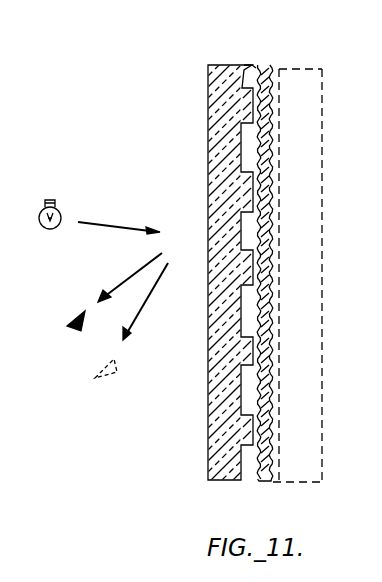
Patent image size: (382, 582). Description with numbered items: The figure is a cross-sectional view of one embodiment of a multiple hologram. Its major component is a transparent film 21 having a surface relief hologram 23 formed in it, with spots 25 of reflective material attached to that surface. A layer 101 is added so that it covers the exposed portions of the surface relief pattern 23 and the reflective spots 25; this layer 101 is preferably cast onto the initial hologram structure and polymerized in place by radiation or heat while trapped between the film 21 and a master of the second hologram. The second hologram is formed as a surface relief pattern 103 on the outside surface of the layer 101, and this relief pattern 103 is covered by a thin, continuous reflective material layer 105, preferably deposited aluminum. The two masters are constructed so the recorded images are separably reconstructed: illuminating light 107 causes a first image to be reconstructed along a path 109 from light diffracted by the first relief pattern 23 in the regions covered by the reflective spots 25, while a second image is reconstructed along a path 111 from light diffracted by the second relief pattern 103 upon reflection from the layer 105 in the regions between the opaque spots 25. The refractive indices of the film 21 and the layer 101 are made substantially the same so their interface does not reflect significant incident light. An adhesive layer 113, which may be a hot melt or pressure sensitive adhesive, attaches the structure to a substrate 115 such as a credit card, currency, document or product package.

The transparent film 21 is at (208, 78).
The surface relief hologram 23 is at (208, 198).
The spots of reflective material 25 is at (247, 101).
The layer 101 is at (252, 64).
The surface relief pattern 103 is at (262, 65).
The thin reflective material layer 105 is at (274, 68).
The illuminating light 107 is at (125, 222).
The path 109 is at (130, 272).
The path 111 is at (143, 308).
The adhesive layer 113 is at (273, 482).
The substrate 115 is at (322, 465).